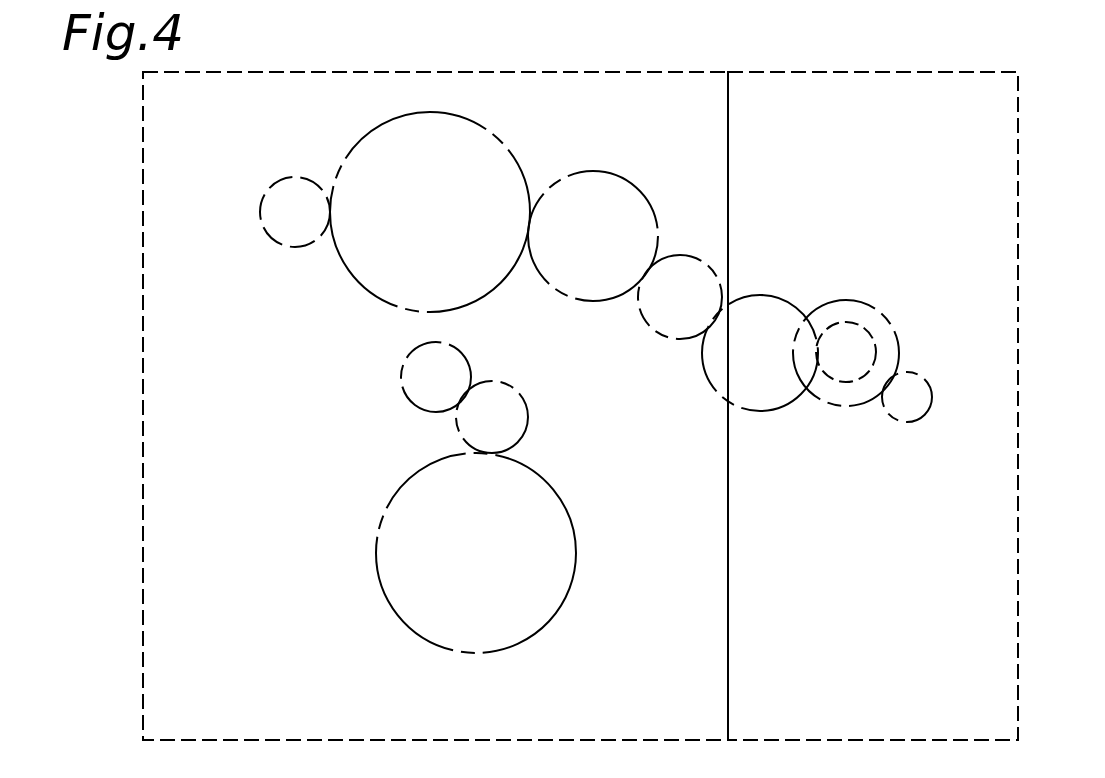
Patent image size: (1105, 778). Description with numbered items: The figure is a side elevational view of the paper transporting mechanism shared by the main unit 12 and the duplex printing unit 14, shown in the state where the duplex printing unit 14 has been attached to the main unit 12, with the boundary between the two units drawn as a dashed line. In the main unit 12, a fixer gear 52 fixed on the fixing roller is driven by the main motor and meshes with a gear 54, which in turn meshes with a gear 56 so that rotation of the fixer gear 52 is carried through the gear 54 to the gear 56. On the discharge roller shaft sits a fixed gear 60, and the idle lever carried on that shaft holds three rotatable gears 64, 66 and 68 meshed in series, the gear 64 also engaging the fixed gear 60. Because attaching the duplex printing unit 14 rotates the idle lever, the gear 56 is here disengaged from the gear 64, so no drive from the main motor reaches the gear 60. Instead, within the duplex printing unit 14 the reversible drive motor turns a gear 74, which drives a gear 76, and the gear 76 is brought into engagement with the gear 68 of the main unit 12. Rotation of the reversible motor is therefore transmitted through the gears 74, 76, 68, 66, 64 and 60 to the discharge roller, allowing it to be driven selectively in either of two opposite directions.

The main unit 12 is at (143, 355).
The duplex printing unit 14 is at (1018, 345).
The fixer gear 52 is at (377, 553).
The gear 54 is at (528, 416).
The gear 56 is at (404, 388).
The fixed gear 60 is at (284, 245).
The rotatable gear 64 is at (363, 282).
The rotatable gear 66 is at (602, 171).
The rotatable gear 68 is at (688, 256).
The gear 74 is at (892, 333).
The gear 76 is at (782, 295).